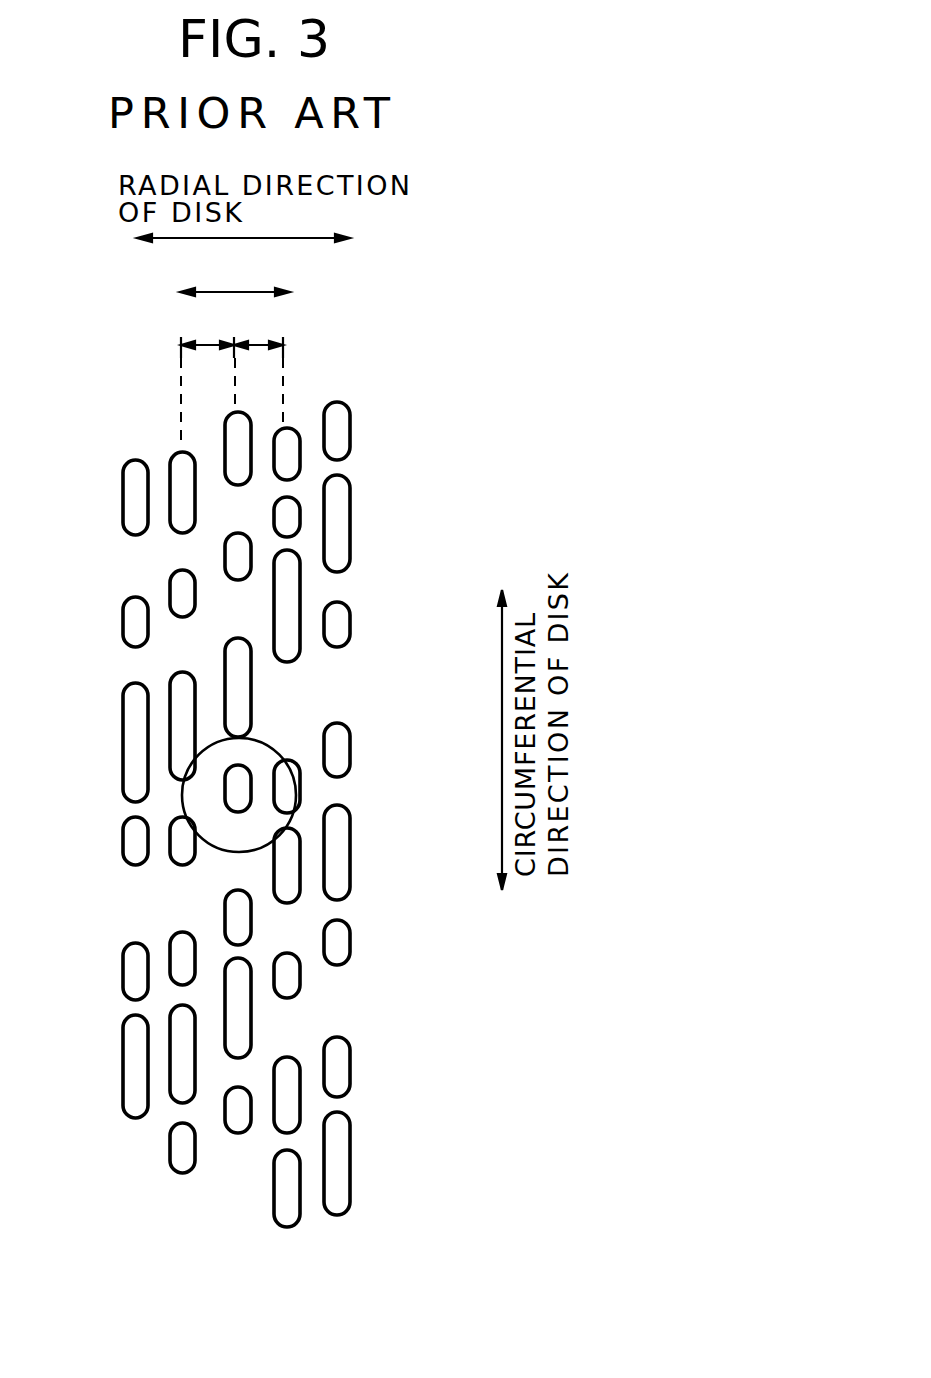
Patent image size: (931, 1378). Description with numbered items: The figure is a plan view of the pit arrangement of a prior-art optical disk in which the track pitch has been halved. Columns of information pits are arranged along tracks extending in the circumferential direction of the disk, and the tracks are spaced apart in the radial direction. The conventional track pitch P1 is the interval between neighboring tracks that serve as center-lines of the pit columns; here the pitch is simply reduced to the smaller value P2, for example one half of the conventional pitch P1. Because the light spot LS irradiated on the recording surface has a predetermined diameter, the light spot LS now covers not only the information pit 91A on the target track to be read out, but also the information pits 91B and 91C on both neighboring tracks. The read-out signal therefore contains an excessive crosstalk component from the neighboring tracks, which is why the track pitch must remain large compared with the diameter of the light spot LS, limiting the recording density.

The information pit on the target track 91A is at (237, 805).
The information pit on neighboring track 91B is at (290, 788).
The information pit on neighboring track 91C is at (177, 743).
The light spot LS is at (277, 750).
The track pitch P1 is at (235, 275).
The reduced track pitch P2 is at (232, 377).